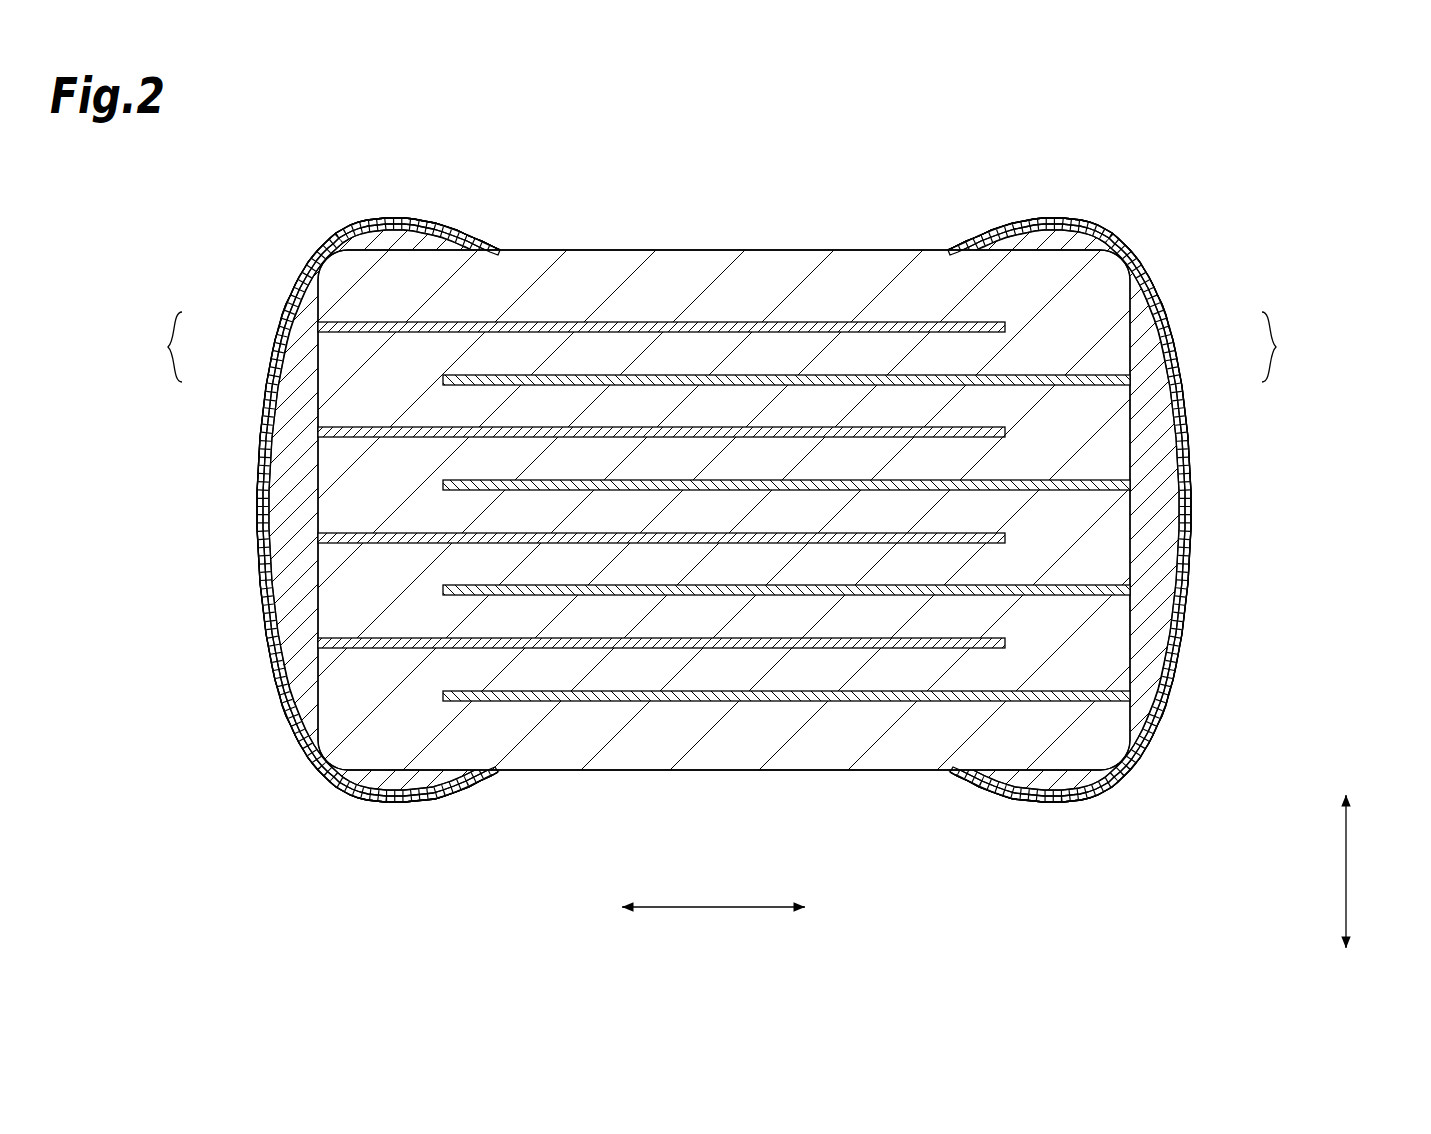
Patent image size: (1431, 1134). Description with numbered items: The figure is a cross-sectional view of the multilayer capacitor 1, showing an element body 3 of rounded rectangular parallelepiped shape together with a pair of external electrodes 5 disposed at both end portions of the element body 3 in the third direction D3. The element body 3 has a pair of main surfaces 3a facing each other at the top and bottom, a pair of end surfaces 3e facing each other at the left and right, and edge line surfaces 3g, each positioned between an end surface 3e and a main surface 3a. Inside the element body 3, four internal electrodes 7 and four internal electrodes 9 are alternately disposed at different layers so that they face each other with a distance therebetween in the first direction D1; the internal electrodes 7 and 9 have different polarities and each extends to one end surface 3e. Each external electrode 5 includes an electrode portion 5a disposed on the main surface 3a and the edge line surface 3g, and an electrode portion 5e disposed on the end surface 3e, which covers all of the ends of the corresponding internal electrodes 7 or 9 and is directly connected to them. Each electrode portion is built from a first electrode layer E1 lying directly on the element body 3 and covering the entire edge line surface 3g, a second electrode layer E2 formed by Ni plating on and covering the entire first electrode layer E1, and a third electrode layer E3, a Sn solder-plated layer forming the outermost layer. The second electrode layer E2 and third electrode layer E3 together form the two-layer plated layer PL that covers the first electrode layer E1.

The multilayer capacitor 1 is at (1191, 171).
The element body 3 is at (859, 249).
The main surface 3a is at (600, 250).
The end surface 3e is at (318, 530).
The edge line surface 3g is at (325, 265).
The external electrode 5 is at (715, 510).
The electrode portion 5a is at (360, 221).
The electrode portion 5e is at (257, 503).
The internal electrode 7 is at (745, 424).
The internal electrode 9 is at (609, 599).
The first electrode layer E1 is at (305, 613).
The second electrode layer E2 is at (268, 354).
The third electrode layer E3 is at (273, 320).
The plated layer PL is at (719, 347).
The first direction D1 is at (1346, 882).
The third direction D3 is at (700, 910).